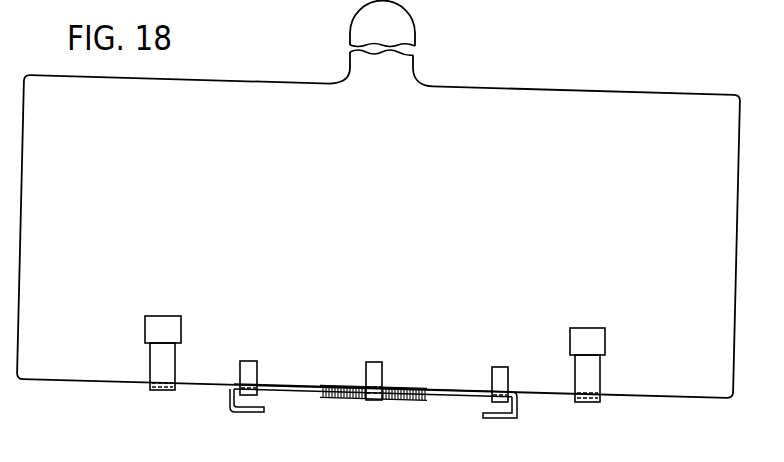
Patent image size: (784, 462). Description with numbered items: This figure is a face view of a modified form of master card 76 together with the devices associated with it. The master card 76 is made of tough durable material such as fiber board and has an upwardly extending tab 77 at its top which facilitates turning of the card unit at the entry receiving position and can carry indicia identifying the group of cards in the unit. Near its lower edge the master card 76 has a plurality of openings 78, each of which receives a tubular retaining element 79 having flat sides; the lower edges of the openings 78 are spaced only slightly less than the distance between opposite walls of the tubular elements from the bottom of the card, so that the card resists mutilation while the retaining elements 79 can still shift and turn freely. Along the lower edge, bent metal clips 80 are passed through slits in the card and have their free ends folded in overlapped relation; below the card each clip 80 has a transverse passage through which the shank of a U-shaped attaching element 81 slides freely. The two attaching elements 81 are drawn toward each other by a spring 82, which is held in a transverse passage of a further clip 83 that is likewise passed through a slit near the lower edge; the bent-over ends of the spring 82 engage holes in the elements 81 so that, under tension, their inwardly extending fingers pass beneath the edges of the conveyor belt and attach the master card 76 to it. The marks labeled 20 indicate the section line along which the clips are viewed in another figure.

The master card 76 is at (580, 102).
The upwardly extending tab 77 is at (410, 40).
The openings 78 is at (167, 323).
The retaining elements 79 is at (165, 363).
The bent metal clips 80 is at (252, 374).
The U-shaped attaching element 81 is at (230, 414).
The spring 82 is at (392, 400).
The clip 83 is at (377, 370).
The section line 20- 20 is at (265, 315).